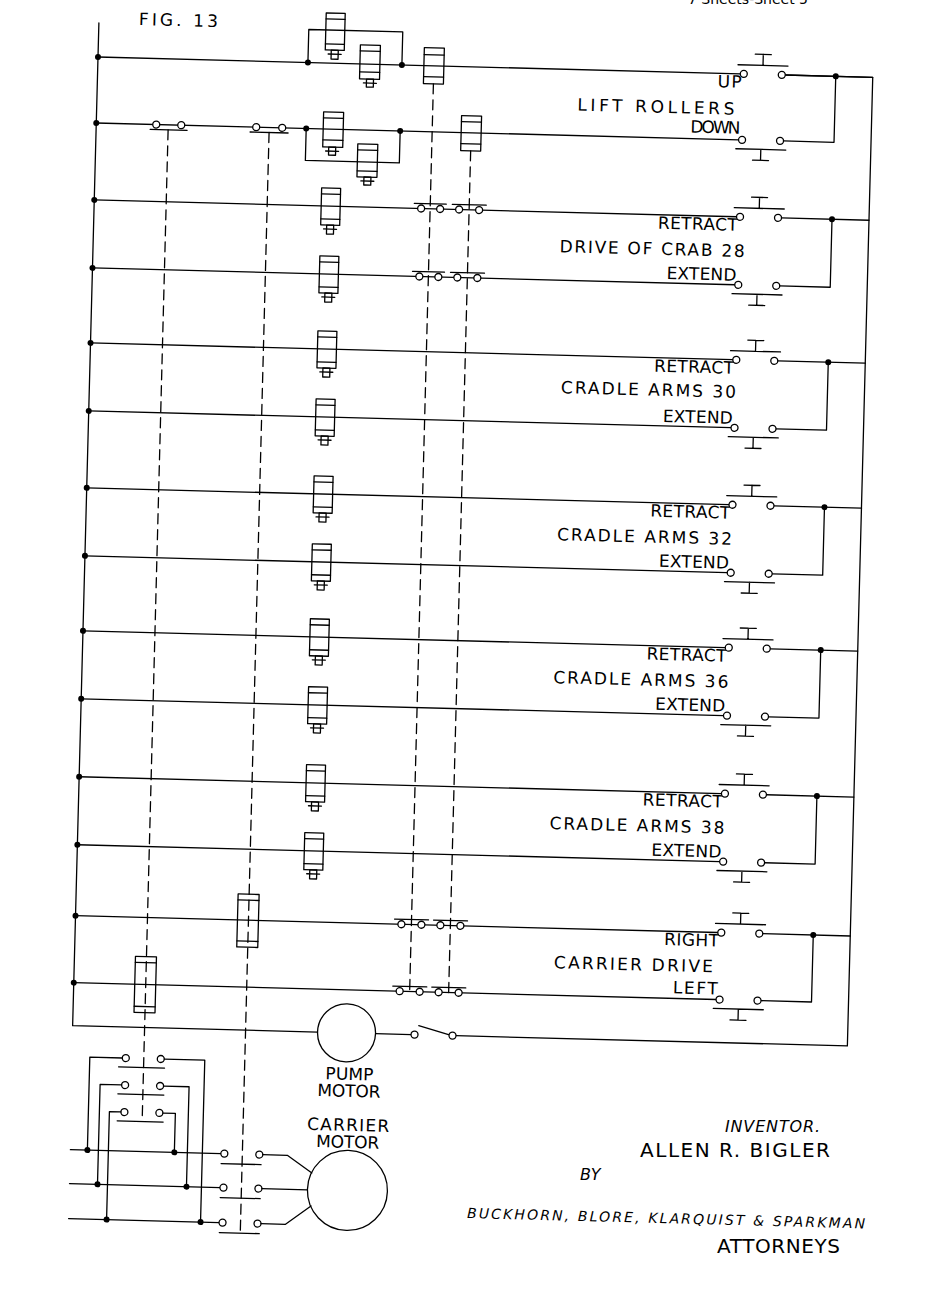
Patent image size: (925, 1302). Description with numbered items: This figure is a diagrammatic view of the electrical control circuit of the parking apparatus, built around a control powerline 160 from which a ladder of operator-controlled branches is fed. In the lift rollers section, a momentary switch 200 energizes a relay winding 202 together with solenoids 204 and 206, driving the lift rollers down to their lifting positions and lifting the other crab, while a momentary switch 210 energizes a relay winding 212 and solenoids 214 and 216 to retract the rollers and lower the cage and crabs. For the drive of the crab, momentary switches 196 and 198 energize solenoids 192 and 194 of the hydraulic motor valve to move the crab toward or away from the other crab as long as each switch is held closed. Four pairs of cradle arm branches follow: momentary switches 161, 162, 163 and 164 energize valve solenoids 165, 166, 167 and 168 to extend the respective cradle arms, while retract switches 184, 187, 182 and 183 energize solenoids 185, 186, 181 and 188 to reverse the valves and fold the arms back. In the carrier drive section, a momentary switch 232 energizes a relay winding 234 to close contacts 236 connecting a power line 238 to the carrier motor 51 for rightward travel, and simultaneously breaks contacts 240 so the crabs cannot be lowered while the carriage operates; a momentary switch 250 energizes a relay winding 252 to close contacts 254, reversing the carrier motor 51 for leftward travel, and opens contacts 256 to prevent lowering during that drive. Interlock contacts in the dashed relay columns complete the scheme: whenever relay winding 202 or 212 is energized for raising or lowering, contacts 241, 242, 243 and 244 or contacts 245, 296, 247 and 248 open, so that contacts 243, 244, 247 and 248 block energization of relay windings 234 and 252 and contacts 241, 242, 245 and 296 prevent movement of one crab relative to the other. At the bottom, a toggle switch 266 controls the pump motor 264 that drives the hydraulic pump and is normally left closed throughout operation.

The control powerline 160 is at (104, 44).
The momentary switch 200 is at (766, 57).
The momentary switch 210 is at (769, 123).
The relay winding 202 is at (443, 40).
The relay winding 212 is at (484, 107).
The solenoid 204 is at (325, 16).
The solenoid 206 is at (366, 80).
The solenoid 214 is at (345, 108).
The solenoid 216 is at (370, 180).
The contacts 256 is at (165, 120).
The contacts 240 is at (267, 120).
The contacts 241 is at (426, 195).
The contacts 245 is at (476, 195).
The contacts 242 is at (427, 263).
The relay contacts 296 is at (477, 263).
The solenoid 192 is at (344, 220).
The solenoid 194 is at (344, 288).
The momentary switch 196 is at (766, 200).
The momentary switch 198 is at (769, 268).
The solenoid 185 is at (344, 363).
The valve solenoid 165 is at (344, 431).
The retract switch 184 is at (766, 343).
The momentary switch 161 is at (769, 411).
The solenoid 186 is at (344, 508).
The valve solenoid 166 is at (344, 576).
The retract switch 187 is at (766, 488).
The momentary switch 162 is at (769, 556).
The solenoid 181 is at (344, 651).
The valve solenoid 167 is at (344, 719).
The momentary switch 182 is at (766, 631).
The momentary switch 163 is at (769, 699).
The solenoid 188 is at (344, 797).
The valve solenoid 168 is at (344, 865).
The momentary switch 183 is at (766, 777).
The momentary switch 164 is at (769, 845).
The relay winding 234 is at (281, 941).
The relay winding 252 is at (181, 956).
The momentary switch 232 is at (766, 916).
The momentary switch 250 is at (769, 983).
The contacts 243 is at (428, 920).
The contacts 244 is at (428, 979).
The contacts 247 is at (476, 920).
The contacts 248 is at (477, 980).
The pump motor 264 is at (391, 1046).
The toggle switch 266 is at (463, 1032).
The contacts 254 is at (153, 1100).
The contacts 236 is at (262, 1202).
The power line 238 is at (119, 1173).
The carrier motor 51 is at (415, 1196).